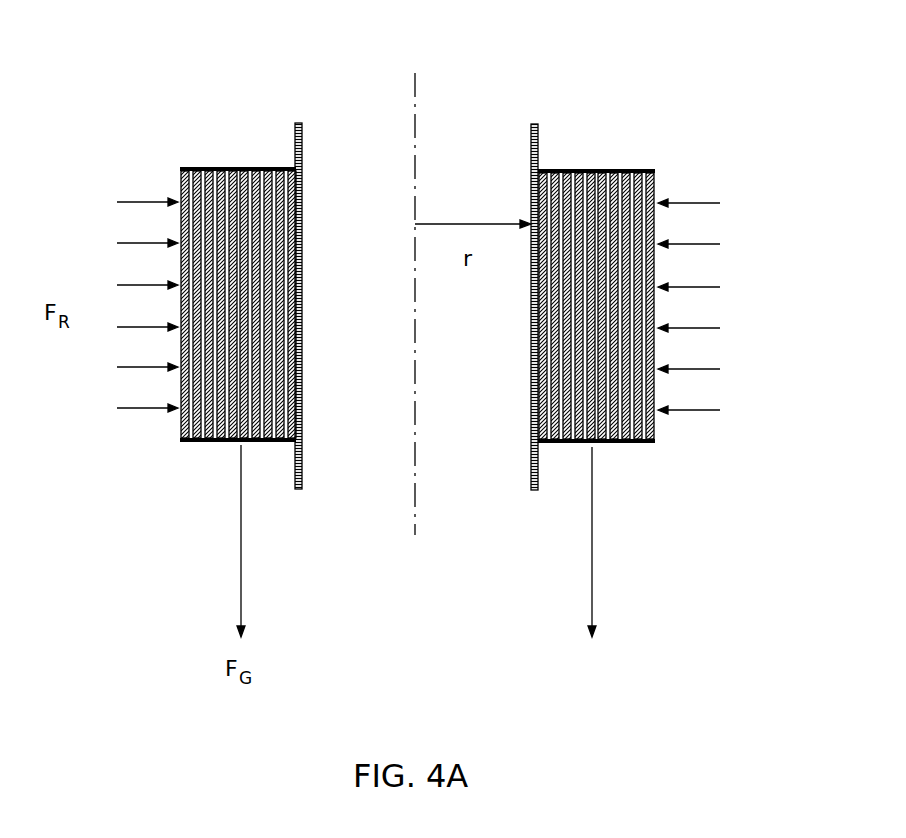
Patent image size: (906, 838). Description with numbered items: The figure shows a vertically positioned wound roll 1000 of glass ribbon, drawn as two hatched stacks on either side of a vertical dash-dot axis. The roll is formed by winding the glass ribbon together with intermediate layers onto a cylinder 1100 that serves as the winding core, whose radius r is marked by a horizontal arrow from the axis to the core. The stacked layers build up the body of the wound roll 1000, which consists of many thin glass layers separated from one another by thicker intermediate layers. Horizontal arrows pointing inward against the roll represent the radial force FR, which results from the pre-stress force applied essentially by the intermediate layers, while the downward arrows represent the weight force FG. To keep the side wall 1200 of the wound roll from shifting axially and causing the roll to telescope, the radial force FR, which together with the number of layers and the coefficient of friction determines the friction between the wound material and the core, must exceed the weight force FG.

The wound roll 1000 is at (675, 160).
The cylinder 1100 is at (533, 118).
The side wall 1200 is at (657, 442).